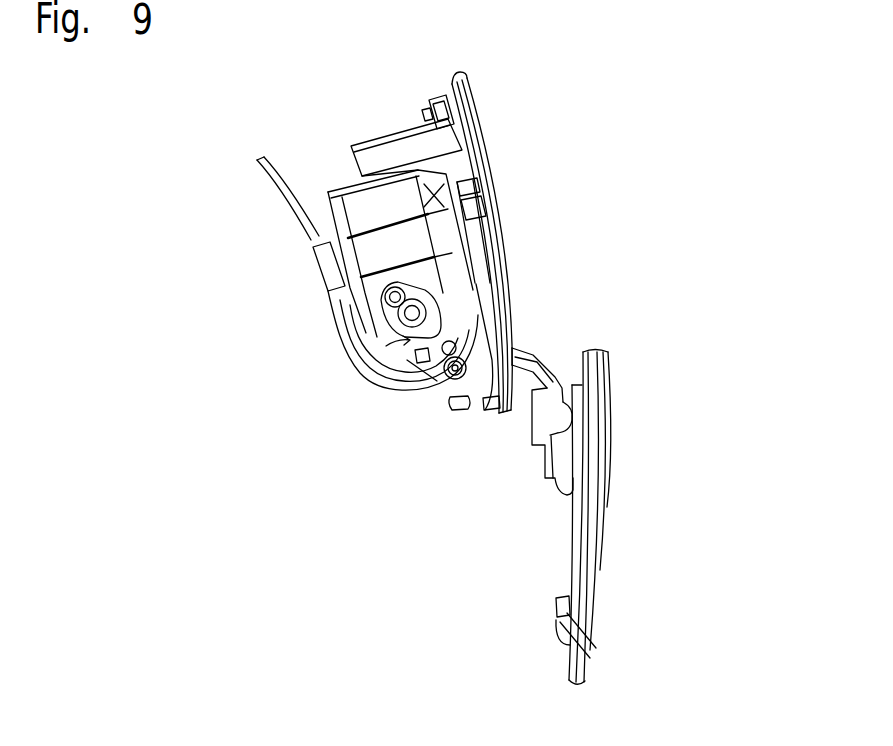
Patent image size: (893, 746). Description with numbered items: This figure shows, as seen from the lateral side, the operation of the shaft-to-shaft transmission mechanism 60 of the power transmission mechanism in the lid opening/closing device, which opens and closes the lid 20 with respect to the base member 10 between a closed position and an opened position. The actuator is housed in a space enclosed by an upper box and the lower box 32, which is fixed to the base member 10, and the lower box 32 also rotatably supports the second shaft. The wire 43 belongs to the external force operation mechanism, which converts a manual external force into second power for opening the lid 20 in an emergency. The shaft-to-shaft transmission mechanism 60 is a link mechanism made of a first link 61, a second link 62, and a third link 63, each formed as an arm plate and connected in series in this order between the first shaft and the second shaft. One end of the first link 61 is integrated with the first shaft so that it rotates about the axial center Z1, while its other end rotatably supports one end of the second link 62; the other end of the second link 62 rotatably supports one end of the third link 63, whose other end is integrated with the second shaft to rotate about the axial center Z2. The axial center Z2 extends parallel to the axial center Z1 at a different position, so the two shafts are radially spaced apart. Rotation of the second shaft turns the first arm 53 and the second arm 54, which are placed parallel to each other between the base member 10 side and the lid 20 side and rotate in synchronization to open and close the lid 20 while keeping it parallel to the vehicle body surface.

The base member 10 is at (425, 153).
The lid 20 is at (604, 430).
The lower box 32 is at (347, 312).
The wire 43 is at (274, 181).
The first arm 53 is at (540, 372).
The second arm 54 is at (543, 442).
The shaft-to-shaft transmission mechanism 60 is at (430, 318).
The first link 61 is at (386, 302).
The second link 62 is at (416, 355).
The third link 63 is at (445, 375).
The axial center Z1 is at (406, 315).
The axial center Z2 is at (451, 380).